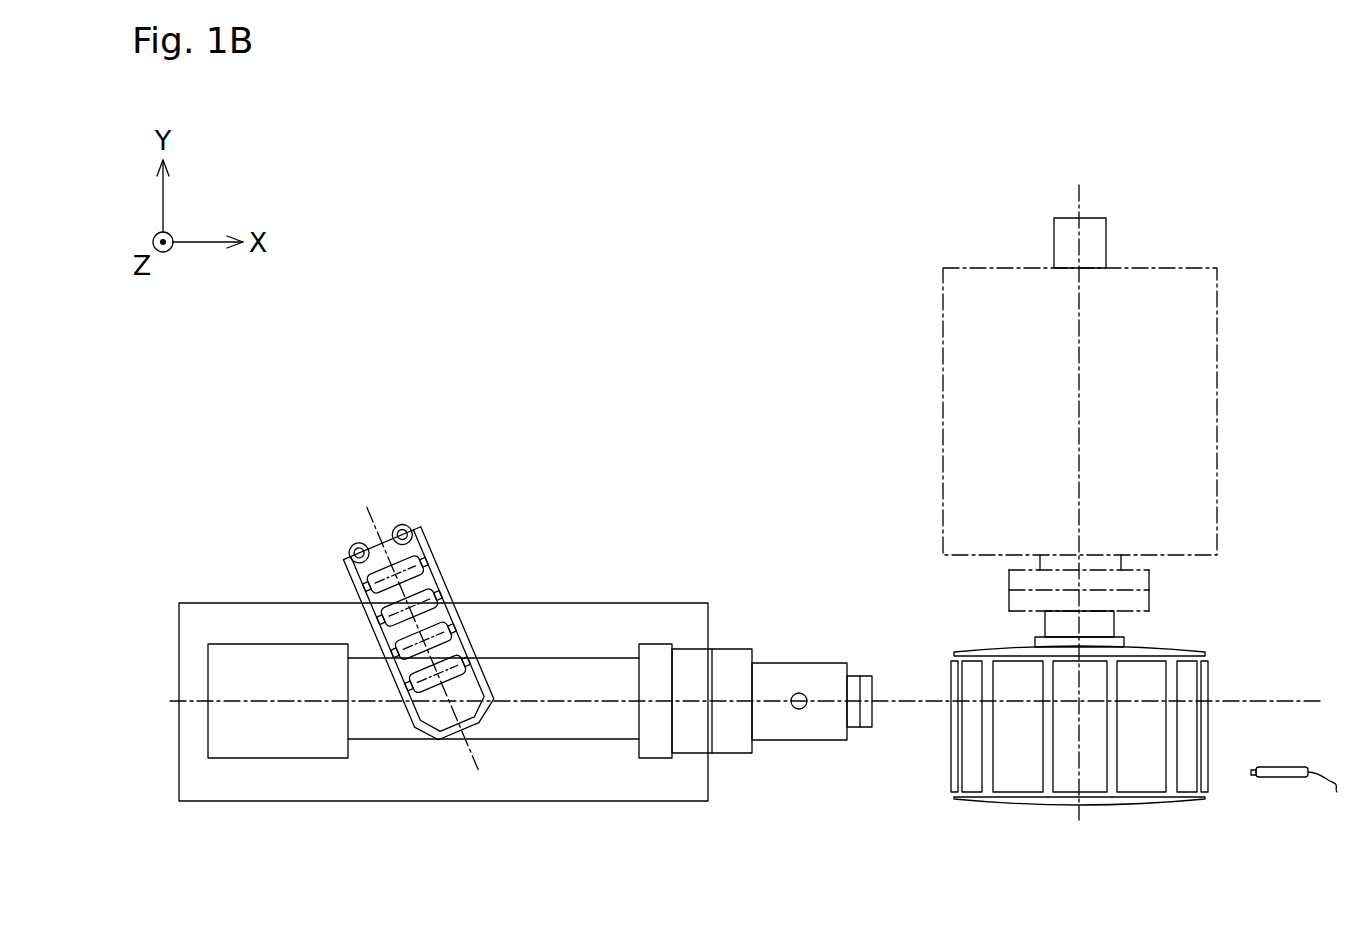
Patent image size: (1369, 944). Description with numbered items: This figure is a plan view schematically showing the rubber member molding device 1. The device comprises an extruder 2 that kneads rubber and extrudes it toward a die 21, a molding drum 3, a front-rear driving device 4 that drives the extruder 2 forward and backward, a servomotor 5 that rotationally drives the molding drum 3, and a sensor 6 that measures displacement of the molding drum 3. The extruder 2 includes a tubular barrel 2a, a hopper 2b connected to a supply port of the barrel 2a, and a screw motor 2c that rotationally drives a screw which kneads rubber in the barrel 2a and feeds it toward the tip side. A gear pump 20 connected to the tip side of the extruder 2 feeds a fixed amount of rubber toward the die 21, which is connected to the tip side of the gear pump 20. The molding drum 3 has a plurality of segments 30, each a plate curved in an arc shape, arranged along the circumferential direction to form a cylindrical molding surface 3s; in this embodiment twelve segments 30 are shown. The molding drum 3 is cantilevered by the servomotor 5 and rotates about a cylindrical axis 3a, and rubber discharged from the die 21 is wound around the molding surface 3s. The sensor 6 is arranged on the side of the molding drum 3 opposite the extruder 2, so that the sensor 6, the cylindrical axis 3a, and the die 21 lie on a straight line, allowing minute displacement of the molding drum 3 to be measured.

The rubber member molding device 1 is at (662, 185).
The extruder 2 is at (562, 647).
The barrel 2a is at (497, 667).
The hopper 2b is at (448, 582).
The screw motor 2c is at (253, 643).
The front-rear driving device 4 is at (576, 810).
The gear pump 20 is at (824, 663).
The die 21 is at (868, 676).
The molding drum 3 is at (1222, 642).
The cylindrical axis 3a is at (1078, 488).
The molding surface 3s is at (950, 757).
The segments 30 is at (1016, 783).
The servomotor 5 is at (1225, 403).
The sensor 6 is at (1282, 780).